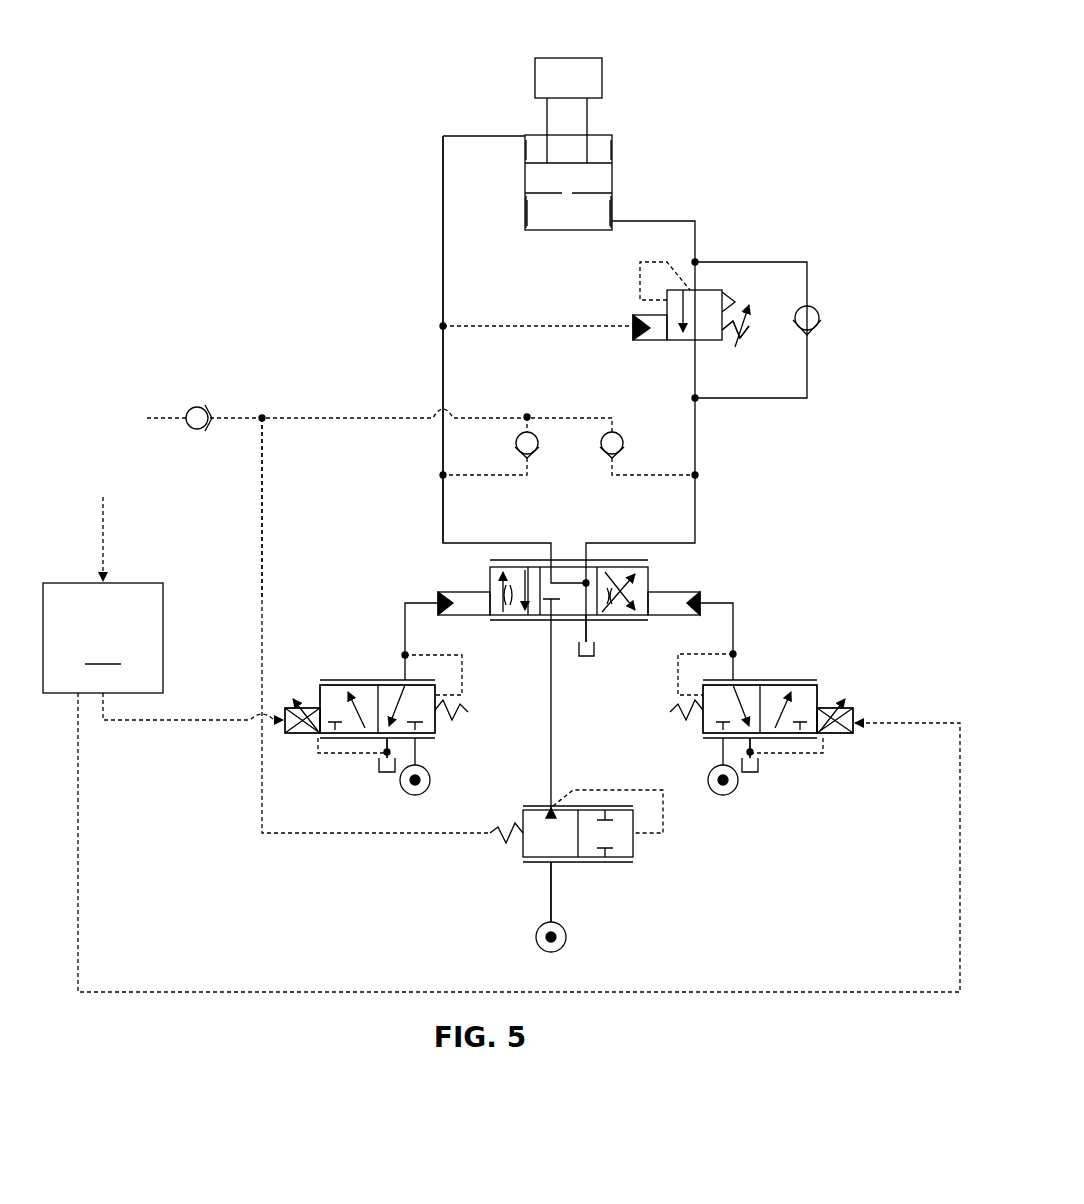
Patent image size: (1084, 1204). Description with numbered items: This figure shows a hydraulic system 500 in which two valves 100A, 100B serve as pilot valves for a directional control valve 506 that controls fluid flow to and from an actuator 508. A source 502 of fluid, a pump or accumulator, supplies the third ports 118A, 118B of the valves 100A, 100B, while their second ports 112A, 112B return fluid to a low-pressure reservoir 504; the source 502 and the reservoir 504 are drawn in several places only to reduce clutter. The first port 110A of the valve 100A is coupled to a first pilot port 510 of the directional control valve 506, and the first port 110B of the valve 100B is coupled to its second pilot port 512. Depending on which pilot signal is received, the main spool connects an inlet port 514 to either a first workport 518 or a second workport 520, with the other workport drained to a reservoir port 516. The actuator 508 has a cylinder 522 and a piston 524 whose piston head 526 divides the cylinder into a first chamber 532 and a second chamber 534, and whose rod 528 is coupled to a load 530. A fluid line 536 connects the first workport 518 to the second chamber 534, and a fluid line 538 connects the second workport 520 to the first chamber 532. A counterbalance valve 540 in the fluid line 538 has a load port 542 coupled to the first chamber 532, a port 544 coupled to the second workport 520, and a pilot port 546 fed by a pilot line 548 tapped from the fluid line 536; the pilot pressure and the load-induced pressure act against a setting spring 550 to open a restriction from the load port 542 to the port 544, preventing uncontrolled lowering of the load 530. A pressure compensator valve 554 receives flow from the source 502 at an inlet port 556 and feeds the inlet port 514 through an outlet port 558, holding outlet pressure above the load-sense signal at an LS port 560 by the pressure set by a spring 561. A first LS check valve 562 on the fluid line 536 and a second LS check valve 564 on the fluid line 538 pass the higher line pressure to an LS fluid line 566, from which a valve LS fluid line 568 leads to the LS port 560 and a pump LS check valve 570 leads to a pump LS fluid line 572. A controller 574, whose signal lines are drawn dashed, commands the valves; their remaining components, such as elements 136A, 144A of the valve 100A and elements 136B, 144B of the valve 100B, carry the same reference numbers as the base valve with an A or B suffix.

The hydraulic system 500 is at (240, 198).
The source of fluid 502 is at (430, 782).
The reservoir of fluid 504 is at (598, 650).
The directional control valve 506 is at (665, 575).
The actuator 508 is at (525, 93).
The first pilot port 510 is at (436, 602).
The second pilot port 512 is at (702, 597).
The inlet port 514 is at (546, 624).
The reservoir port 516 is at (591, 624).
The first workport 518 is at (552, 556).
The second workport 520 is at (580, 556).
The cylinder 522 is at (528, 215).
The piston 524 is at (537, 158).
The piston head 526 is at (532, 175).
The rod 528 is at (587, 110).
The load 530 is at (597, 55).
The first chamber 532 is at (608, 205).
The second chamber 534 is at (612, 155).
The fluid line 536 is at (443, 290).
The fluid line 538 is at (697, 452).
The counterbalance valve 540 is at (800, 235).
The load port 542 is at (700, 258).
The port 544 is at (690, 347).
The pilot port 546 is at (633, 325).
The pilot line 548 is at (530, 326).
The setting spring 550 is at (745, 340).
The pressure compensator valve 554 is at (625, 878).
The inlet port 556 is at (547, 872).
The outlet port 558 is at (549, 803).
The load-sense port 560 is at (490, 843).
The spring 561 is at (503, 838).
The first LS check valve 562 is at (513, 446).
The second LS check valve 564 is at (620, 435).
The LS fluid line 566 is at (328, 417).
The valve LS fluid line 568 is at (262, 545).
The pump LS check valve 570 is at (208, 405).
The pump LS fluid line 572 is at (158, 417).
The controller 574 is at (501, 731).
The valve 100A is at (360, 658).
The valve 100B is at (805, 635).
The first port 110A is at (400, 678).
The first port 110B is at (742, 675).
The second port 112A is at (382, 748).
The second port 112B is at (762, 748).
The third port 118A is at (420, 745).
The third port 118B is at (715, 745).
The first spring 136A is at (468, 710).
The second spring 136B is at (675, 710).
The first solenoid 144A is at (310, 706).
The second solenoid 144B is at (843, 705).